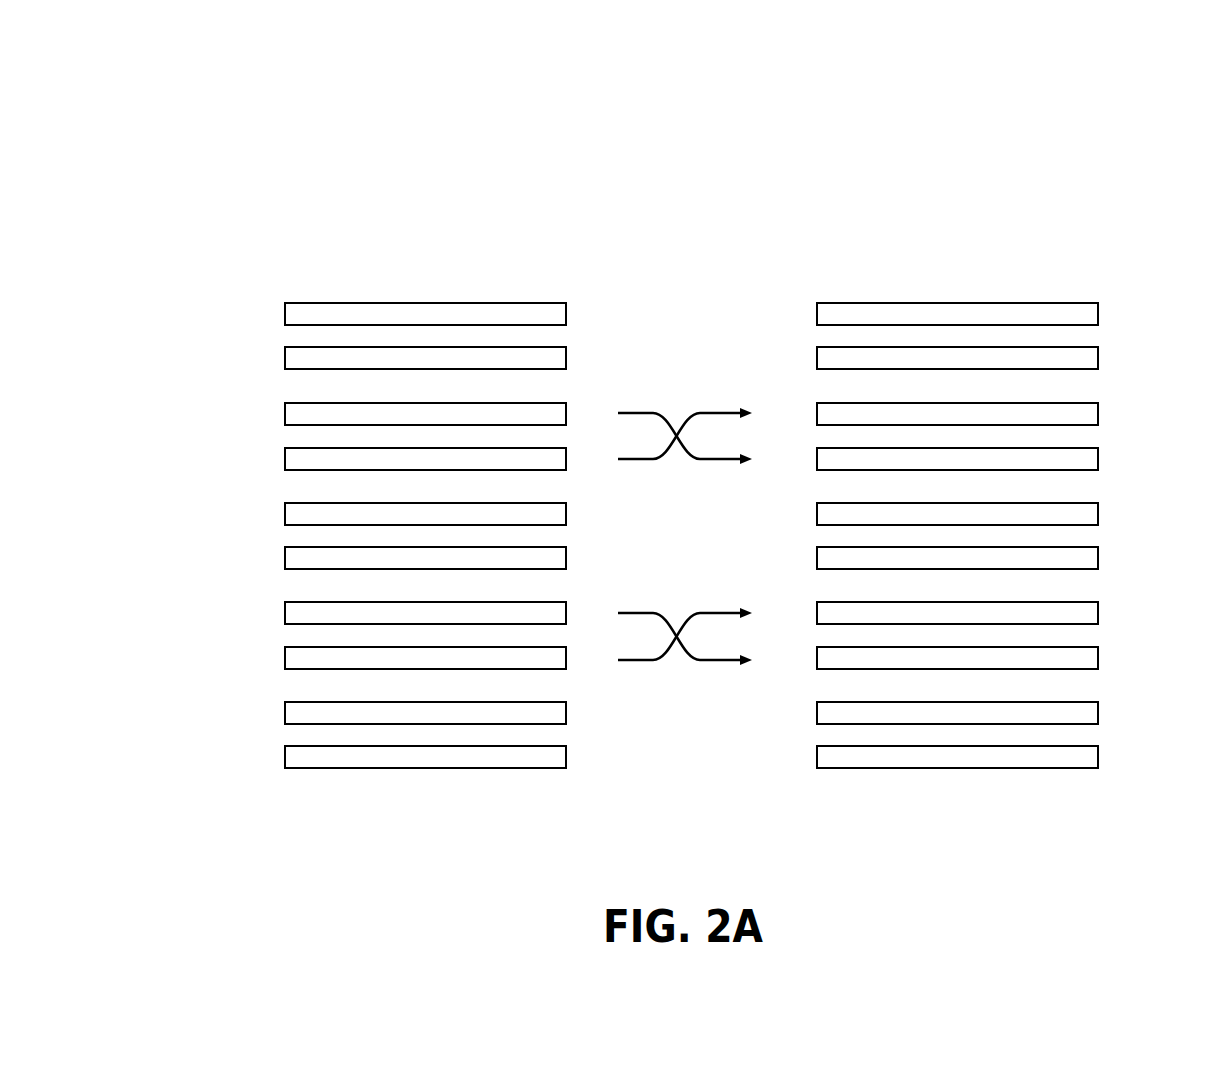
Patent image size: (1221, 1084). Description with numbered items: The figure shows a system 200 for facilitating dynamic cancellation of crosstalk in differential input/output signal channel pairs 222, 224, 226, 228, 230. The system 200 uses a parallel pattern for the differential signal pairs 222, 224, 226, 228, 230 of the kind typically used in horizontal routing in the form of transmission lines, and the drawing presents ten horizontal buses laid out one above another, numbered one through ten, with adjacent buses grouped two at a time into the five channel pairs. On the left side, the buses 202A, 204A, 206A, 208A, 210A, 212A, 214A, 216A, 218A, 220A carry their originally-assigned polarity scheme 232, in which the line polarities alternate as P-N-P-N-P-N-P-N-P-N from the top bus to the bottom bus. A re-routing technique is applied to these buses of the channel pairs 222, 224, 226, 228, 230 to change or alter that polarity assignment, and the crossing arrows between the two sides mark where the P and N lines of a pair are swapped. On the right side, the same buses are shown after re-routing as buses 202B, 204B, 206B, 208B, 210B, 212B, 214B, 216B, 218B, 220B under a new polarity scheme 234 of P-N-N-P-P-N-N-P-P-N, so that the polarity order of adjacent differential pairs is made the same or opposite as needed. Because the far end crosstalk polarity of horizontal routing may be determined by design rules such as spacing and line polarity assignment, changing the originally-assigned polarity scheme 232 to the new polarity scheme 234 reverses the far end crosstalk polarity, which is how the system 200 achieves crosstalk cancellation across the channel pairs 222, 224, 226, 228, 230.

The system 200 is at (893, 128).
The bus 202A is at (371, 303).
The bus 204A is at (370, 369).
The bus 206A is at (461, 403).
The bus 208A is at (460, 470).
The bus 210A is at (371, 503).
The bus 212A is at (370, 569).
The bus 214A is at (461, 602).
The bus 216A is at (371, 702).
The bus 218A is at (460, 669).
The bus 220A is at (370, 768).
The bus 202B is at (903, 303).
The bus 204B is at (902, 369).
The bus 206B is at (993, 403).
The bus 208B is at (992, 470).
The bus 210B is at (903, 503).
The bus 212B is at (902, 569).
The bus 214B is at (993, 602).
The bus 216B is at (903, 702).
The bus 218B is at (992, 669).
The bus 220B is at (902, 768).
The differential signal channel pair 222 is at (257, 357).
The differential signal channel pair 224 is at (257, 458).
The differential signal channel pair 226 is at (257, 557).
The differential signal channel pair 228 is at (257, 657).
The differential signal channel pair 230 is at (250, 756).
The originally-assigned polarity scheme 232 is at (583, 295).
The new polarity scheme 234 is at (785, 295).